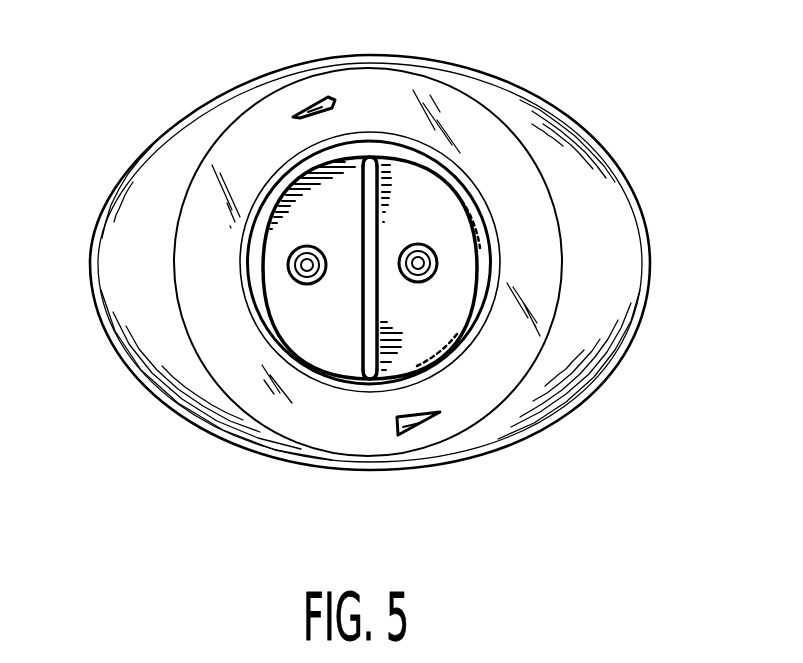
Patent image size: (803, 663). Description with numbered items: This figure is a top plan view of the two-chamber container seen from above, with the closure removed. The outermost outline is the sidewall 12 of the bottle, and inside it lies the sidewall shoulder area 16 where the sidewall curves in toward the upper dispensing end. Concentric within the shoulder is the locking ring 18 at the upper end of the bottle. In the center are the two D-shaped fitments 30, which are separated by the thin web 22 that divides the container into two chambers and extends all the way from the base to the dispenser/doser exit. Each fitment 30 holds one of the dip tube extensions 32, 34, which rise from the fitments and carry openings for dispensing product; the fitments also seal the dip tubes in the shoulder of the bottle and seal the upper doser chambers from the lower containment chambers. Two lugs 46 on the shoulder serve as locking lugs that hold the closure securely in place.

The sidewall 12 is at (648, 299).
The sidewall shoulder area 16 is at (577, 217).
The locking ring 18 is at (497, 135).
The web 22 is at (371, 330).
The fitment 30 is at (413, 158).
The dip tube extension 32 is at (288, 266).
The dip tube extension 34 is at (437, 265).
The lugs 46 is at (318, 96).